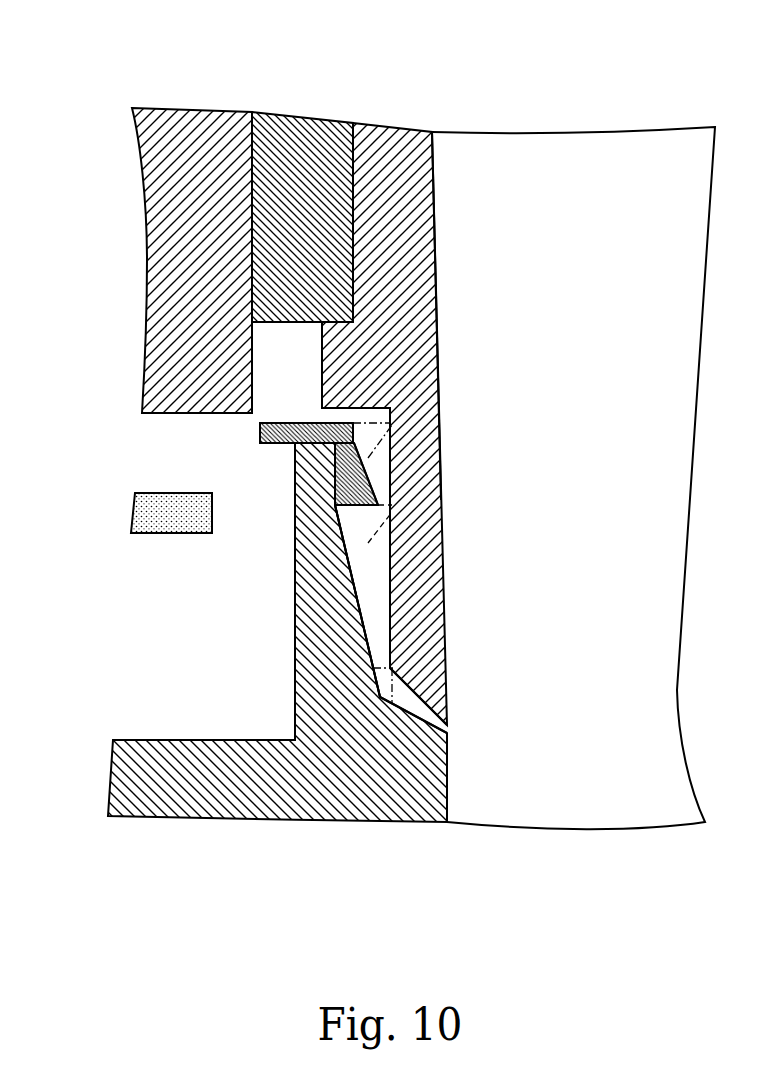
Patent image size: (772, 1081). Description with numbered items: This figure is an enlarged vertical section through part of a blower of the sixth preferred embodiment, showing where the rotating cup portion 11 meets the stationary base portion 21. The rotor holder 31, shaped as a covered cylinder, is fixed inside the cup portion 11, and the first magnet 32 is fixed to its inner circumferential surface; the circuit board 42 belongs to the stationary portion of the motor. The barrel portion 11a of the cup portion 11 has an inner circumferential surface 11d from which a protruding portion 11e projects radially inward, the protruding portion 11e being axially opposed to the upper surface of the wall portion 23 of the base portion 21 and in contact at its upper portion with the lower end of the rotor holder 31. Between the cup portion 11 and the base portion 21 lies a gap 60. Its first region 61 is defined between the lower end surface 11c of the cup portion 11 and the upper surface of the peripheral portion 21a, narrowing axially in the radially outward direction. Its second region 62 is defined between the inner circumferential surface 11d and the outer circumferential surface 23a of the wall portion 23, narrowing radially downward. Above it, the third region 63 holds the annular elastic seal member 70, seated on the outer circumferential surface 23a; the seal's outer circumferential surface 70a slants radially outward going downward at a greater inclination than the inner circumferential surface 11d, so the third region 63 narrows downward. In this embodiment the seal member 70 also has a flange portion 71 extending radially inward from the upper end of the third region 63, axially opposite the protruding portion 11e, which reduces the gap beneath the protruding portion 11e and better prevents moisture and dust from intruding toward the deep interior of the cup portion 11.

The cup portion 11 is at (373, 227).
The barrel portion 11a is at (400, 306).
The lower end surface 11c is at (445, 667).
The inner circumferential surface 11d is at (388, 603).
The protruding portion 11e is at (385, 368).
The base portion 21 is at (270, 802).
The peripheral portion 21a is at (447, 733).
The wall portion 23 is at (328, 657).
The outer circumferential surface 23a is at (348, 558).
The rotor holder 31 is at (282, 218).
The first magnet 32 is at (160, 368).
The circuit board 42 is at (146, 518).
The gap 60 is at (378, 577).
The first region 61 is at (420, 713).
The second region 62 is at (390, 521).
The third region 63 is at (390, 423).
The seal member 70 is at (347, 476).
The outer circumferential surface 70a is at (345, 477).
The flange portion 71 is at (265, 433).